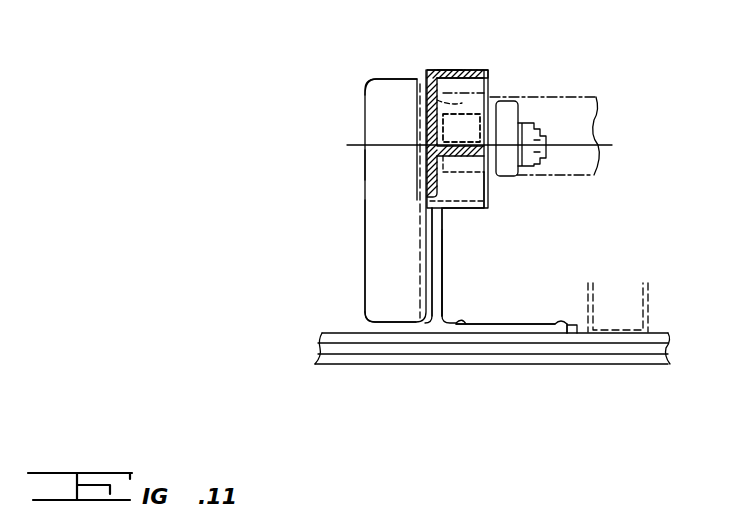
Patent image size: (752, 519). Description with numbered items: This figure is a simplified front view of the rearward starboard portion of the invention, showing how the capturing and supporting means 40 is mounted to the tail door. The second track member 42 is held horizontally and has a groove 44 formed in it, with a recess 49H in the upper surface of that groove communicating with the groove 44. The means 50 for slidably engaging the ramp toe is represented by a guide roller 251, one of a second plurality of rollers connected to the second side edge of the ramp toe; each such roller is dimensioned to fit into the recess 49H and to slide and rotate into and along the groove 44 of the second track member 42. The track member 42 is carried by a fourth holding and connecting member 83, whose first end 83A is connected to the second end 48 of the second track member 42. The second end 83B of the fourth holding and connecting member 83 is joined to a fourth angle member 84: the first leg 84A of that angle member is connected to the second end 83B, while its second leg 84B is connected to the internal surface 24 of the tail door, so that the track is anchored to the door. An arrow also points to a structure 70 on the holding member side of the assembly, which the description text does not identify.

The internal surface 24 is at (660, 333).
The capturing and supporting means 40 is at (352, 260).
The second track member 42 is at (463, 70).
The groove 44 is at (495, 97).
The second end 48 is at (489, 70).
The recess 49H is at (448, 71).
The means for slidably engaging the ramp toe 50 is at (500, 192).
The direction arrow 70 is at (352, 166).
The fourth holding and connecting member 83 is at (375, 203).
The first end 83A is at (378, 87).
The second end 83B is at (373, 310).
The fourth angle member 84 is at (466, 326).
The first leg 84A is at (443, 228).
The second leg 84B is at (568, 326).
The guide roller 251 is at (450, 128).